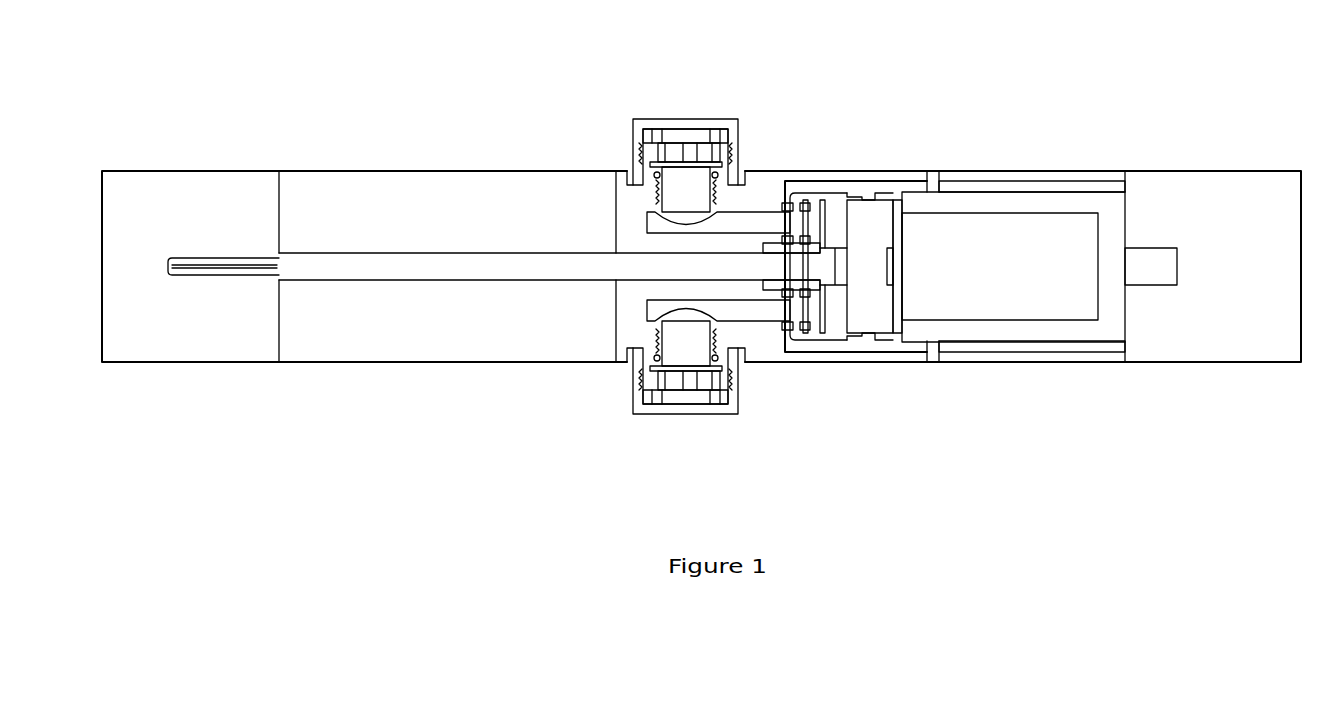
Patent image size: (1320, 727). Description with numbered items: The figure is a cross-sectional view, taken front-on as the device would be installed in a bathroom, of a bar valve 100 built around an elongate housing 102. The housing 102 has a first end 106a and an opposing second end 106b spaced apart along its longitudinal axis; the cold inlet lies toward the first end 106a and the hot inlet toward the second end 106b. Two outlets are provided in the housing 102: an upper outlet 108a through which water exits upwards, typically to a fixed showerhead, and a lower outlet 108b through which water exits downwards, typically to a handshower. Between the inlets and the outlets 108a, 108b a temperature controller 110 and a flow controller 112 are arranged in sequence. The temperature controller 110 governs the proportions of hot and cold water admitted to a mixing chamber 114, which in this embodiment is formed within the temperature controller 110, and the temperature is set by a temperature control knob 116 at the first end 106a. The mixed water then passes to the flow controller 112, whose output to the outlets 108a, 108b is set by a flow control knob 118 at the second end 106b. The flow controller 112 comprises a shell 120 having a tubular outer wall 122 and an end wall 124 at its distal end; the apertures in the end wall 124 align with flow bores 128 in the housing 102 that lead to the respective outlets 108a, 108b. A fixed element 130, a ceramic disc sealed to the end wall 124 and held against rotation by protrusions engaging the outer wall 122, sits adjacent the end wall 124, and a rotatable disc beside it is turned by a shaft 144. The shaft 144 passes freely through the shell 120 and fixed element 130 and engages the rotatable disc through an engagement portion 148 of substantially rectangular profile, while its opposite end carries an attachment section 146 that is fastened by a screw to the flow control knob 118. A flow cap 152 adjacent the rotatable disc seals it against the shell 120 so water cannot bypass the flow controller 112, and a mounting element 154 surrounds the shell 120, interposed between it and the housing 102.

The bar valve 100 is at (348, 128).
The elongate housing 102 is at (458, 180).
The first end 106a is at (1127, 188).
The second end 106b is at (278, 212).
The upper outlet 108a is at (643, 119).
The lower outlet 108b is at (640, 413).
The temperature controller 110 is at (1062, 342).
The flow controller 112 is at (860, 182).
The mixing chamber 114 is at (1058, 205).
The temperature control knob 116 is at (1213, 362).
The flow control knob 118 is at (165, 363).
The shell 120 is at (805, 343).
The tubular outer wall 122 is at (818, 343).
The end wall 124 is at (787, 312).
The flow bore 128 is at (762, 242).
The fixed element 130 is at (810, 195).
The shaft 144 is at (427, 280).
The attachment section 146 is at (218, 280).
The engagement portion 148 is at (833, 312).
The flow cap 152 is at (887, 337).
The mounting element 154 is at (908, 182).